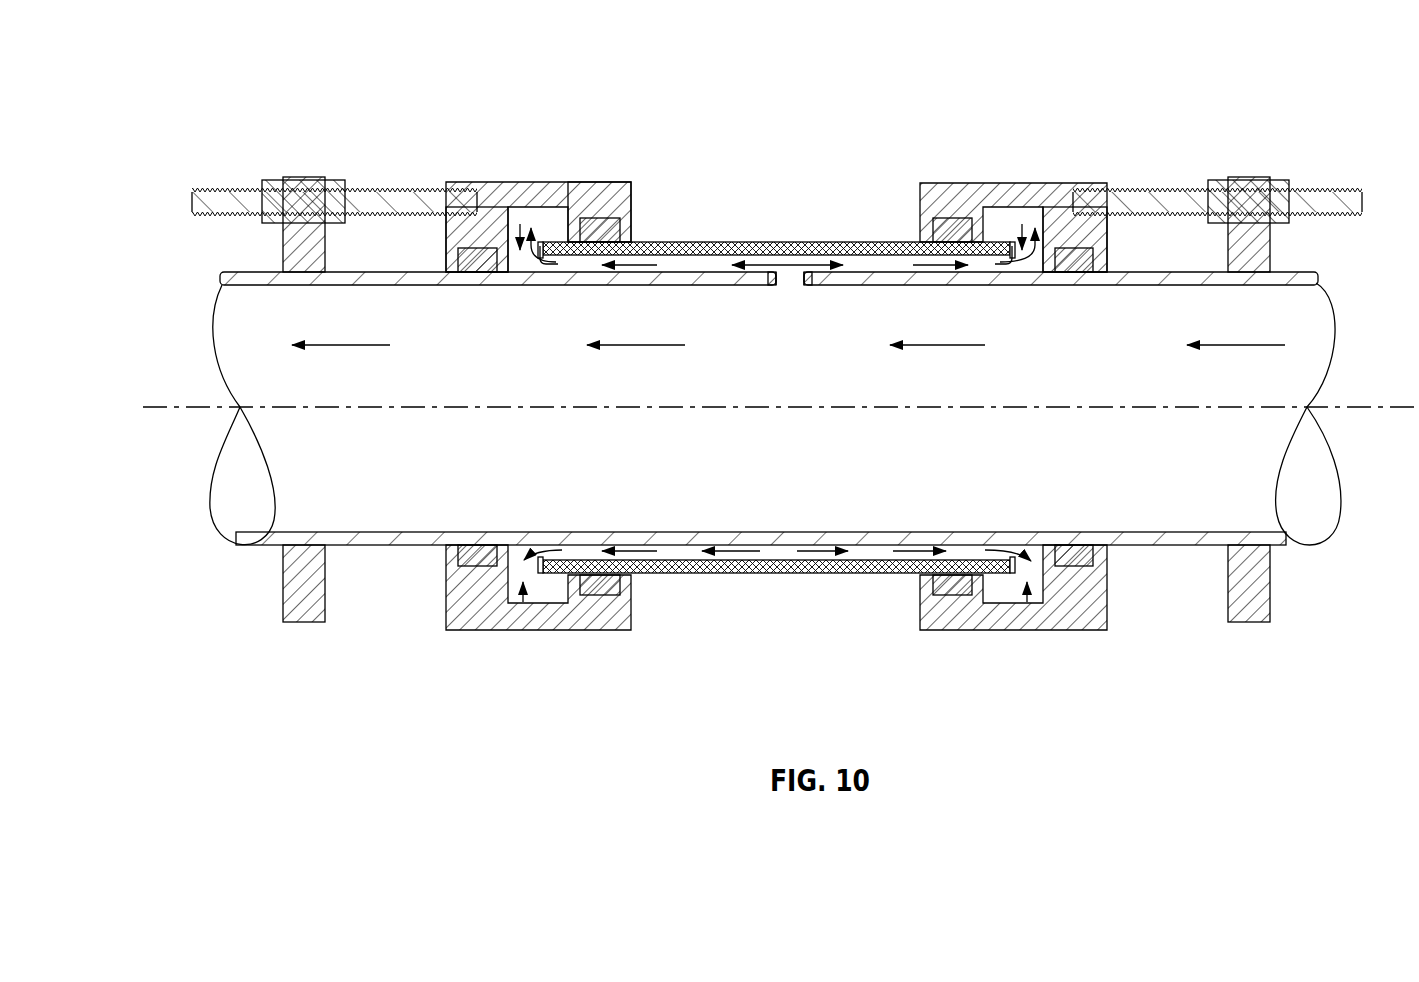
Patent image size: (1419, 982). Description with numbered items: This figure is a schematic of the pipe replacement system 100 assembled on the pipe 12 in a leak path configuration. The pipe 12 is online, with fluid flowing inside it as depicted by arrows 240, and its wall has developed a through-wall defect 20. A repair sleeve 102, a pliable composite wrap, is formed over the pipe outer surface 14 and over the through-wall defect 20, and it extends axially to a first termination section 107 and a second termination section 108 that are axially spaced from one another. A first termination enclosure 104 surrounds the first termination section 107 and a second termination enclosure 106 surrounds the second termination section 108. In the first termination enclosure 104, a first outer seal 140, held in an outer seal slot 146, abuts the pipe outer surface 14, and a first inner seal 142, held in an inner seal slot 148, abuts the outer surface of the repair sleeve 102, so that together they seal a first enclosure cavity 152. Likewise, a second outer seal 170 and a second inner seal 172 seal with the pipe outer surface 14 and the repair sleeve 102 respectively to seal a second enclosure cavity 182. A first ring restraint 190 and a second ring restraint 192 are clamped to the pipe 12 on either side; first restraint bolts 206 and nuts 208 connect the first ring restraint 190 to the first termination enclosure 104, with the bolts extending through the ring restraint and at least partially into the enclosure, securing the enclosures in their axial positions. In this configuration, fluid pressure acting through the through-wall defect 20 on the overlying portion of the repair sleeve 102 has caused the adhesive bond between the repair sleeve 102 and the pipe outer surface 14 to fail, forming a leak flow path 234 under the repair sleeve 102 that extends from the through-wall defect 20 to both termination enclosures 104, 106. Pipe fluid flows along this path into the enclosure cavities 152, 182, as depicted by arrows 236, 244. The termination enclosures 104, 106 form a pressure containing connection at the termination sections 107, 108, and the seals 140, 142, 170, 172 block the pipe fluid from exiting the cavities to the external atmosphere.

The pipe replacement system 100 is at (178, 113).
The pipe 12 is at (218, 271).
The pipe outer surface 14 is at (262, 270).
The through-wall defect 20 is at (787, 276).
The repair sleeve 102 is at (742, 241).
The first termination enclosure 104 is at (608, 181).
The second termination enclosure 106 is at (947, 182).
The first termination section 107 is at (552, 242).
The second termination section 108 is at (994, 252).
The first outer seal 140 is at (460, 200).
The first inner seal 142 is at (590, 218).
The outer seal slot 146 is at (470, 247).
The inner seal slot 148 is at (632, 200).
The first enclosure cavity 152 is at (515, 212).
The second outer seal 170 is at (1092, 242).
The second inner seal 172 is at (940, 218).
The second enclosure cavity 182 is at (1058, 255).
The first ring restraint 190 is at (305, 170).
The second ring restraint 192 is at (1242, 171).
The first restraint bolts 206 is at (365, 190).
The nuts 208 is at (1180, 191).
The leak flow path 234 is at (688, 266).
The arrows 236 is at (640, 262).
The arrows 240 is at (957, 345).
The arrows 244 is at (787, 262).